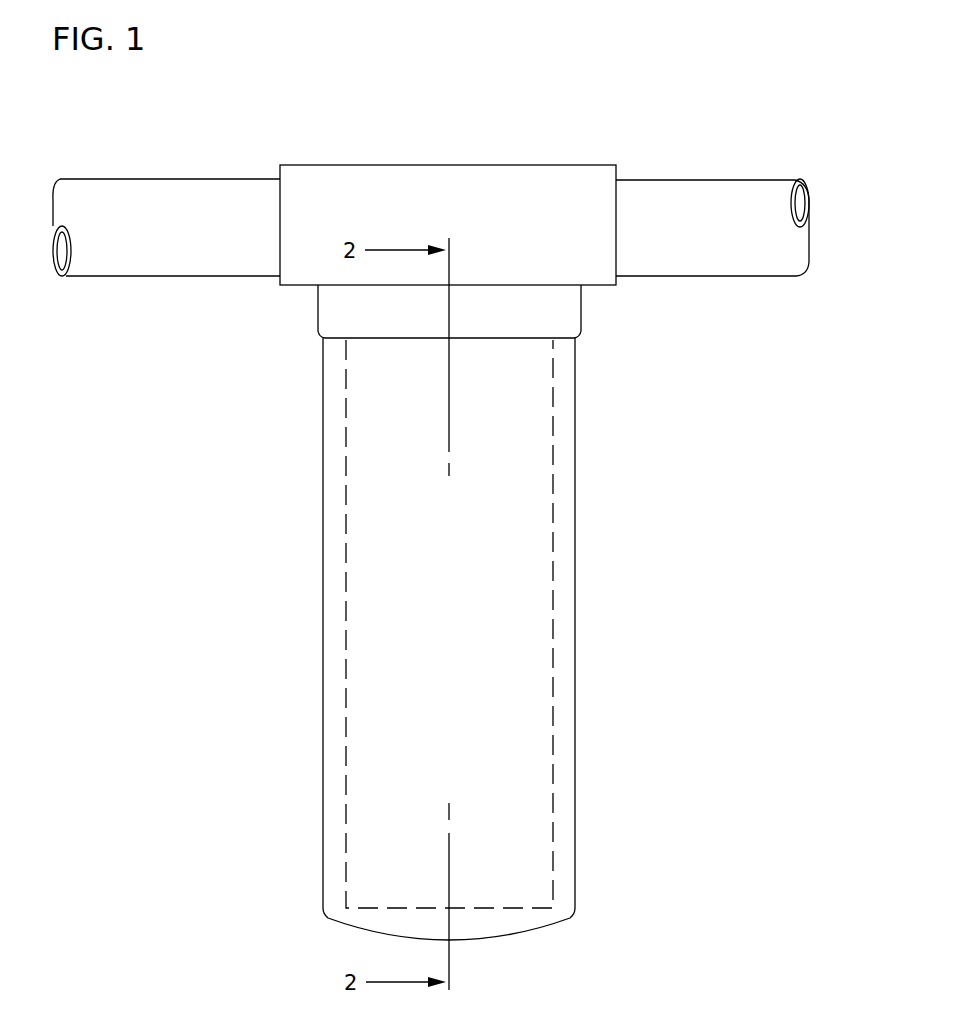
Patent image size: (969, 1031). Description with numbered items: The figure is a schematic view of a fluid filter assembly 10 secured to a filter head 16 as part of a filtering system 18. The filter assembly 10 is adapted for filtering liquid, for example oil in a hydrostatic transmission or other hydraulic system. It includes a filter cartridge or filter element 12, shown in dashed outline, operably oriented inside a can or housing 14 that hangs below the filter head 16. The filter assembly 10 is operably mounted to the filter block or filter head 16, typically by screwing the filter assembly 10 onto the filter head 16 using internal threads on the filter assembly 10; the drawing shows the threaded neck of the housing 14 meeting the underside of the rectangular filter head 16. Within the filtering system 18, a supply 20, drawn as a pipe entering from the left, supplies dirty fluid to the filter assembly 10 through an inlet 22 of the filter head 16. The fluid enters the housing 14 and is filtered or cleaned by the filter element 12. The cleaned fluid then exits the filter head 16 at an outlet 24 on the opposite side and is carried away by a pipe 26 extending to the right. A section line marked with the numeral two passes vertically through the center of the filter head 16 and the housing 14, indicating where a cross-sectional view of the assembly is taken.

The filter assembly 10 is at (491, 612).
The filter element 12 is at (346, 544).
The housing 14 is at (322, 455).
The filter head 16 is at (453, 165).
The filtering system 18 is at (592, 74).
The supply 20 is at (170, 179).
The inlet 22 is at (279, 276).
The outlet 24 is at (618, 179).
The pipe 26 is at (731, 180).